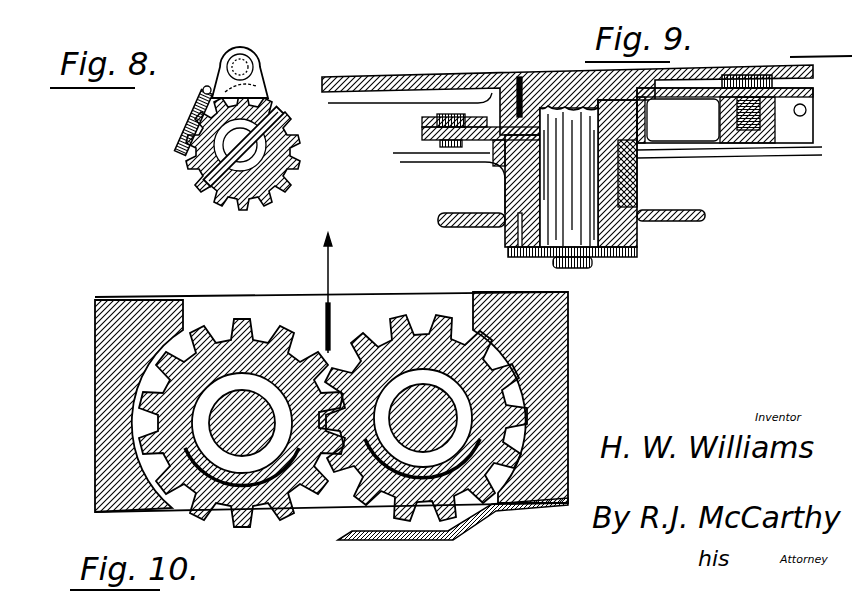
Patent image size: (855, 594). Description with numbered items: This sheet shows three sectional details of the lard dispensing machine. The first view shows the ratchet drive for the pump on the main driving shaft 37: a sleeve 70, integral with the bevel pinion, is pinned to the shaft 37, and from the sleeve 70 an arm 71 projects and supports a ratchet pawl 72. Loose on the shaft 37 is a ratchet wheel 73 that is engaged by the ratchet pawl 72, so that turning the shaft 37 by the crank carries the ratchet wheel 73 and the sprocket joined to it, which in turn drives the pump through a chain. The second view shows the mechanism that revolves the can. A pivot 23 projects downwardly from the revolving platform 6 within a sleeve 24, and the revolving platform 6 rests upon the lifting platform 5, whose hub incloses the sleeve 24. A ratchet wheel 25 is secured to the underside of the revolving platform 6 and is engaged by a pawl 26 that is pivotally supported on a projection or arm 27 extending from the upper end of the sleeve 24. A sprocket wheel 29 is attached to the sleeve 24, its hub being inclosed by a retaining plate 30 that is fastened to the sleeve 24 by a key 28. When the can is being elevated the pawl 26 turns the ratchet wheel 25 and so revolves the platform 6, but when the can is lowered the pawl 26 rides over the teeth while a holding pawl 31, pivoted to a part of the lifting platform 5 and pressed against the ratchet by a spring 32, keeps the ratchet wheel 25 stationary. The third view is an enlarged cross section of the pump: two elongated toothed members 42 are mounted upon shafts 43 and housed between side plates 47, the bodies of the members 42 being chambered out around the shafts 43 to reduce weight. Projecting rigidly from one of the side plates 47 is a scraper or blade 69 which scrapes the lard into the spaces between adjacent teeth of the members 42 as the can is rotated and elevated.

In FIG. 9, the lifting platform 5 is at (397, 160).
In FIG. 9, the revolving platform 6 is at (428, 77).
In FIG. 9, the pivot 23 is at (569, 176).
In FIG. 9, the sleeve 24 is at (638, 181).
In FIG. 9, the ratchet wheel 25 is at (518, 77).
In FIG. 9, the pawl 26 is at (422, 122).
In FIG. 9, the projection or arm 27 is at (483, 143).
In FIG. 9, the key 28 is at (508, 240).
In FIG. 9, the sprocket wheel 29 is at (668, 222).
In FIG. 9, the retaining plate 30 is at (615, 257).
In FIG. 9, the holding pawl 31 is at (725, 109).
In FIG. 9, the spring 32 is at (797, 117).
In FIG. 8, the main driving shaft 37 is at (288, 177).
In FIG. 10, the elongated toothed members 42 is at (238, 322).
In FIG. 10, the shafts 43 is at (247, 410).
In FIG. 10, the side plates 47 is at (112, 305).
In FIG. 10, the scraper or blade 69 is at (420, 540).
In FIG. 8, the sleeve 70 is at (208, 177).
In FIG. 8, the arm 71 is at (250, 88).
In FIG. 8, the ratchet pawl 72 is at (218, 75).
In FIG. 8, the ratchet wheel 73 is at (210, 197).